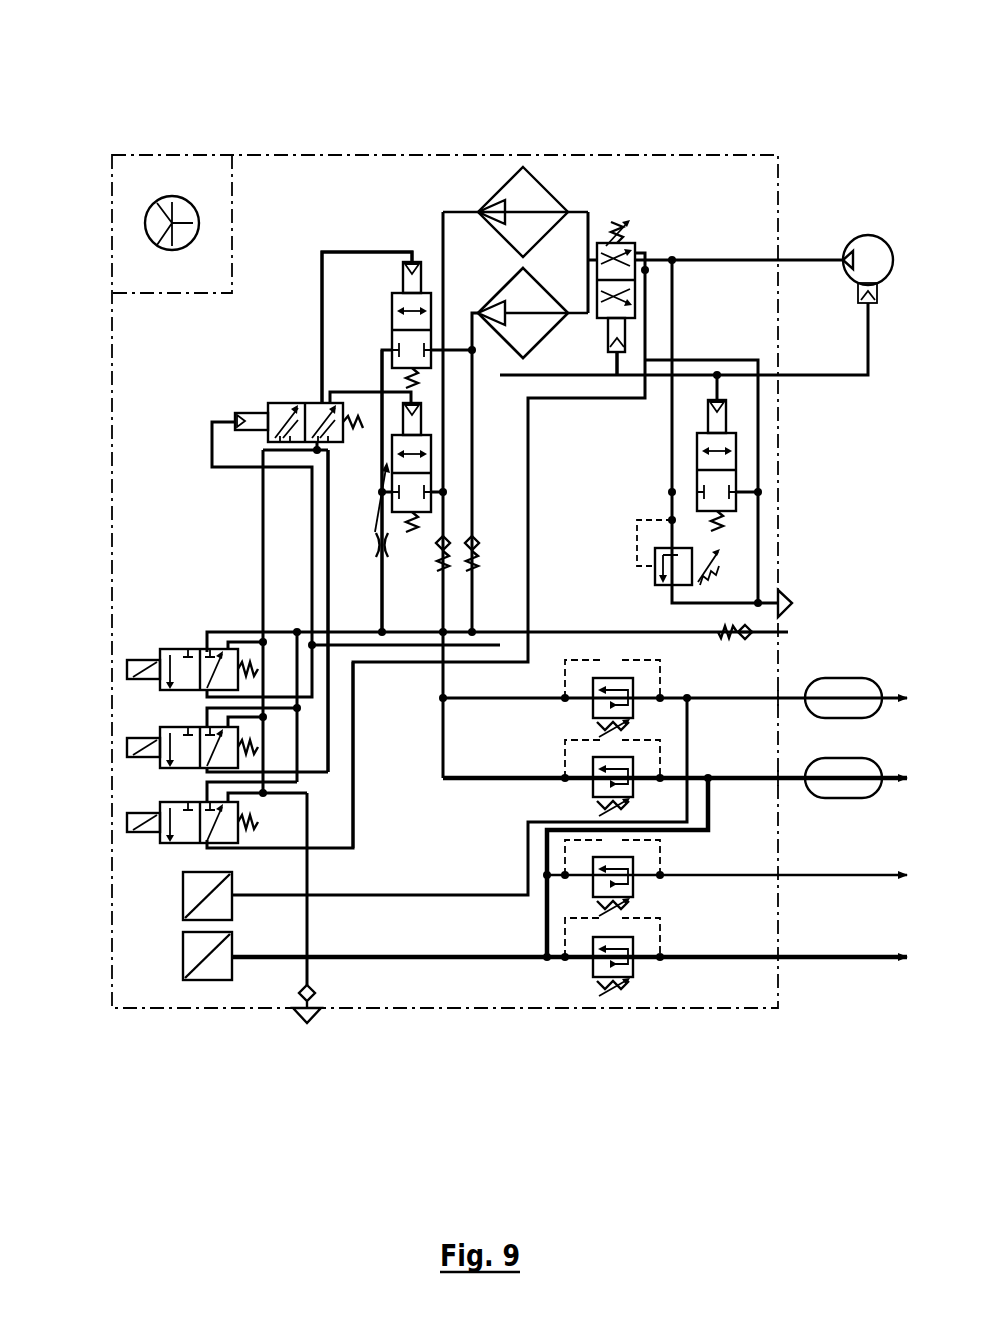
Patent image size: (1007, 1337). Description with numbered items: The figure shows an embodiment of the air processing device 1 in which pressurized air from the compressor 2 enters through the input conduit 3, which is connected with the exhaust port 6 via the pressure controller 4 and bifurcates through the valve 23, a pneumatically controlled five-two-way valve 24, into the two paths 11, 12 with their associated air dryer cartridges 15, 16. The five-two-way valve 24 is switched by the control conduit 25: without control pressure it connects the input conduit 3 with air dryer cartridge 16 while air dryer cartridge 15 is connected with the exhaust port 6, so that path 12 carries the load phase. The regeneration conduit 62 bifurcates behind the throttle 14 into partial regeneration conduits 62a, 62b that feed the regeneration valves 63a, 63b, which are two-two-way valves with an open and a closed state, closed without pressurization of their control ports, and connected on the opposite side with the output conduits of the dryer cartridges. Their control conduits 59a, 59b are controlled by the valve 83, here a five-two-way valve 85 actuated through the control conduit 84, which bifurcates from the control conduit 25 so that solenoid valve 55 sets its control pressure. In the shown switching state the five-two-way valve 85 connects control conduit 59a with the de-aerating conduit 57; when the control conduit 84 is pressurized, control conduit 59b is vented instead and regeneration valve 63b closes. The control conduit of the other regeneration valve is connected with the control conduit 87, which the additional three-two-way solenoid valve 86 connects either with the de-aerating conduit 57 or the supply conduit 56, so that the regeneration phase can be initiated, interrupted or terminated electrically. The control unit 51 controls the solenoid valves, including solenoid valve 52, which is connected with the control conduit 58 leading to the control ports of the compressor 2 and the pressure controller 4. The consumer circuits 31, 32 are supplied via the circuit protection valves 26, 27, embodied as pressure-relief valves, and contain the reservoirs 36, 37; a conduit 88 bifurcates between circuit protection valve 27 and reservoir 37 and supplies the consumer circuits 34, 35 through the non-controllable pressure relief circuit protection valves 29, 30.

The air processing device 1 is at (344, 125).
The compressor 2 is at (865, 228).
The input conduit 3 is at (812, 258).
The pressure controller 4 is at (748, 460).
The exhaust port 6 is at (797, 602).
The path 11 is at (467, 189).
The path 12 is at (573, 258).
The throttle 14 is at (385, 547).
The air dryer cartridge 15 is at (530, 200).
The air dryer cartridge 16 is at (537, 328).
The valve 23 is at (653, 134).
The 5/2-way valve 24 is at (628, 205).
The control conduit 25 is at (600, 362).
The circuit protection valve 26 is at (610, 650).
The circuit protection valve 27 is at (576, 755).
The circuit protection valve 29 is at (646, 890).
The circuit protection valve 30 is at (578, 984).
The consumer circuit 31 is at (789, 679).
The consumer circuit 32 is at (791, 791).
The consumer circuit 34 is at (792, 889).
The consumer circuit 35 is at (792, 972).
The reservoir 36 is at (831, 709).
The reservoir 37 is at (831, 789).
The control unit 51 is at (210, 281).
The solenoid valve 52 is at (110, 820).
The solenoid valve 55 is at (110, 670).
The supply conduit 56 is at (230, 630).
The de-aerating conduit 57 is at (307, 873).
The control conduit 58 is at (355, 823).
The control conduit 59a is at (320, 277).
The control conduit 59b is at (330, 378).
The regeneration conduit 62 is at (382, 598).
The partial regeneration conduit 62a is at (382, 370).
The partial regeneration conduit 62b is at (383, 505).
The regeneration valve 63a is at (377, 299).
The regeneration valve 63b is at (380, 468).
The valve 83 is at (244, 399).
The control conduit 84 is at (212, 444).
The 5/2-way valve 85 is at (249, 394).
The solenoid valve 86 is at (110, 748).
The control conduit 87 is at (318, 778).
The conduit 88 is at (712, 805).